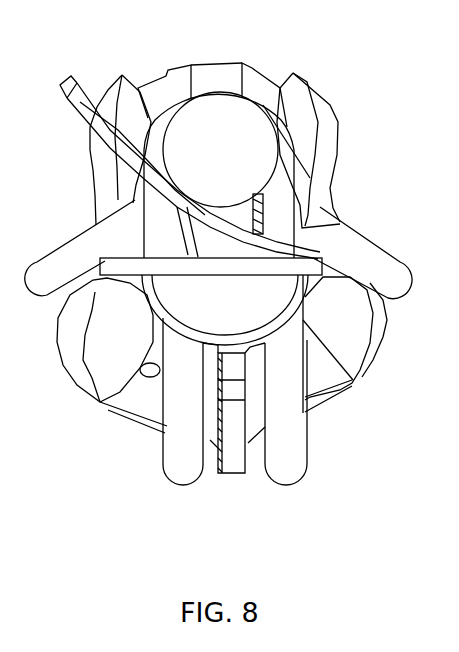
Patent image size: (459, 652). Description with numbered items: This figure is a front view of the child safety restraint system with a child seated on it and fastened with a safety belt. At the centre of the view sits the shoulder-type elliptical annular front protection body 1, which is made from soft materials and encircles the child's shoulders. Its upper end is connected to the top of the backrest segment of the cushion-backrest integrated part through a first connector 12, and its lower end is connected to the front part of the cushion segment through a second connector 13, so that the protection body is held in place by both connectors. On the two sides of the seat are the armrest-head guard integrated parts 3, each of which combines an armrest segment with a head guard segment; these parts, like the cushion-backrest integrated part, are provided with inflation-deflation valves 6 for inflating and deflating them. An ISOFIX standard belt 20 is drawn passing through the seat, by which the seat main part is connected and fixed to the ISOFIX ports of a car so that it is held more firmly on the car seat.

The shoulder-type elliptical annular front protection body 1 is at (285, 183).
The armrest-head guard integrated part 3 is at (103, 342).
The inflation-deflation valve 6 is at (342, 115).
The first connector 12 is at (215, 80).
The second connector 13 is at (237, 458).
The ISOFIX standard belt 20 is at (73, 102).